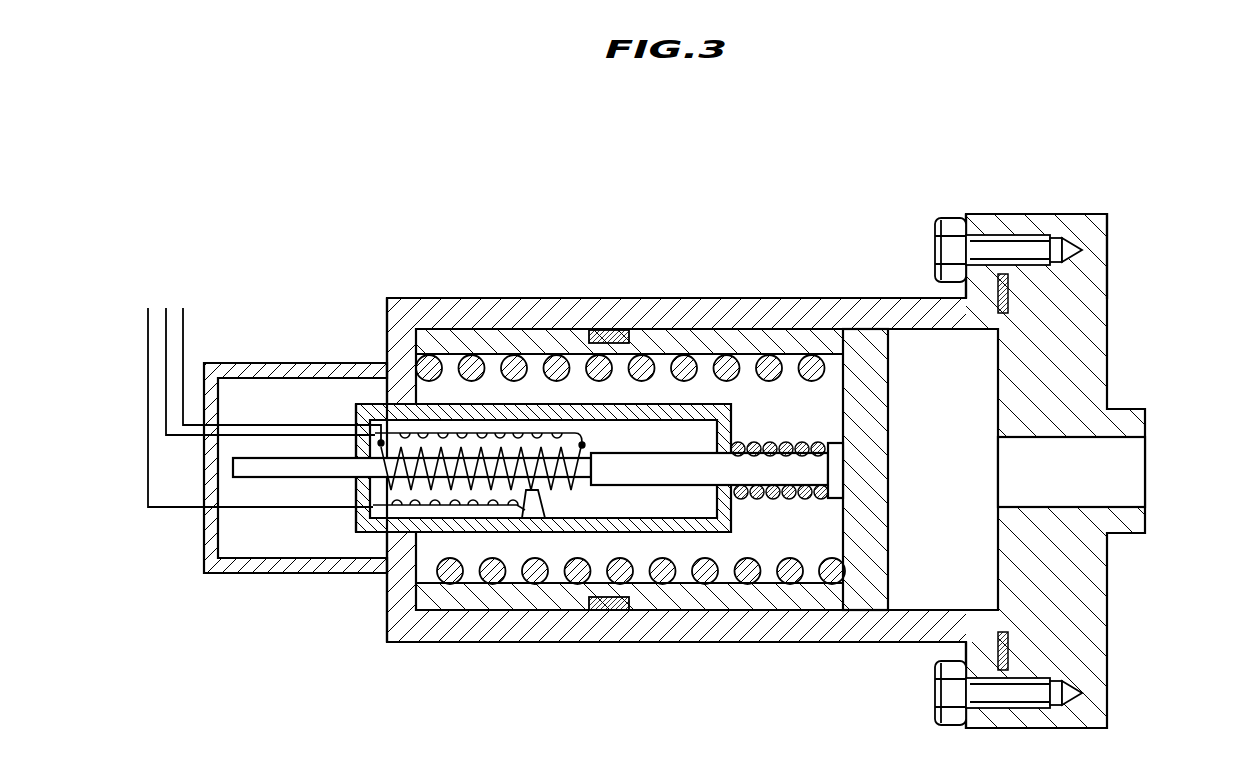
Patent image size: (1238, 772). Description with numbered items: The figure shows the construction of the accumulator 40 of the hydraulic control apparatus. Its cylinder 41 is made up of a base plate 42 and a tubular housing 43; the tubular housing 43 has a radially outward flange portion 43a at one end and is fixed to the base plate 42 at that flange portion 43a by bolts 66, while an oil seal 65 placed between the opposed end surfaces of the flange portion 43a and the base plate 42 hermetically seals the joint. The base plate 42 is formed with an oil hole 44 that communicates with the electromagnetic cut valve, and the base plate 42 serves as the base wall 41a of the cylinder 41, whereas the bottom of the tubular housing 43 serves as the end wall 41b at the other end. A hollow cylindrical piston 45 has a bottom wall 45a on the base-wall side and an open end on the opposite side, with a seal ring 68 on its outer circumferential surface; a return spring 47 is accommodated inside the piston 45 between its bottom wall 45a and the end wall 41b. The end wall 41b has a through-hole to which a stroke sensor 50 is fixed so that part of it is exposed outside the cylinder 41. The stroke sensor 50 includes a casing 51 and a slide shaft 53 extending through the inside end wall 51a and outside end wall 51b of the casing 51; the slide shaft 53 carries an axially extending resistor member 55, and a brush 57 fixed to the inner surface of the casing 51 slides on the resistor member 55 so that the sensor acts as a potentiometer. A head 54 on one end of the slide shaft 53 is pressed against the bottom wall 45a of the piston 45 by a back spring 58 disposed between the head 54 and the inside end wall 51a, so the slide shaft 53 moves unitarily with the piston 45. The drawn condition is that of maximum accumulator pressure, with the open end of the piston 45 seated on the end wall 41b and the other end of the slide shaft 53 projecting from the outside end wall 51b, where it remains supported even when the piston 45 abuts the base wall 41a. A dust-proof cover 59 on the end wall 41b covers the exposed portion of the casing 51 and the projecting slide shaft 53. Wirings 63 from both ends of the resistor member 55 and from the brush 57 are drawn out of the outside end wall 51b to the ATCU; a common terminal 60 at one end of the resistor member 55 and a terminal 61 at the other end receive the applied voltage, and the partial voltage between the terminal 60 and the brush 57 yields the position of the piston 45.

The accumulator 40 is at (606, 252).
The cylinder 41 is at (780, 478).
The base wall 41a is at (1045, 556).
The end wall 41b is at (390, 352).
The base plate 42 is at (1107, 660).
The tubular housing 43 is at (947, 217).
The flange portion 43a is at (978, 220).
The oil hole 44 is at (1085, 440).
The piston 45 is at (888, 522).
The bottom wall 45a is at (872, 400).
The return spring 47 is at (683, 362).
The stroke sensor 50 is at (660, 485).
The casing 51 is at (514, 432).
The inside end wall 51a is at (717, 464).
The outside end wall 51b is at (362, 492).
The slide shaft 53 is at (243, 468).
The head 54 is at (830, 497).
The resistor member 55 is at (565, 490).
The brush 57 is at (530, 512).
The back spring 58 is at (765, 500).
The dust-proof cover 59 is at (248, 363).
The terminal 60 is at (378, 443).
The terminal 61 is at (584, 445).
The wirings 63 is at (145, 342).
The oil seal 65 is at (1008, 290).
The bolts 66 is at (935, 250).
The seal ring 68 is at (604, 612).